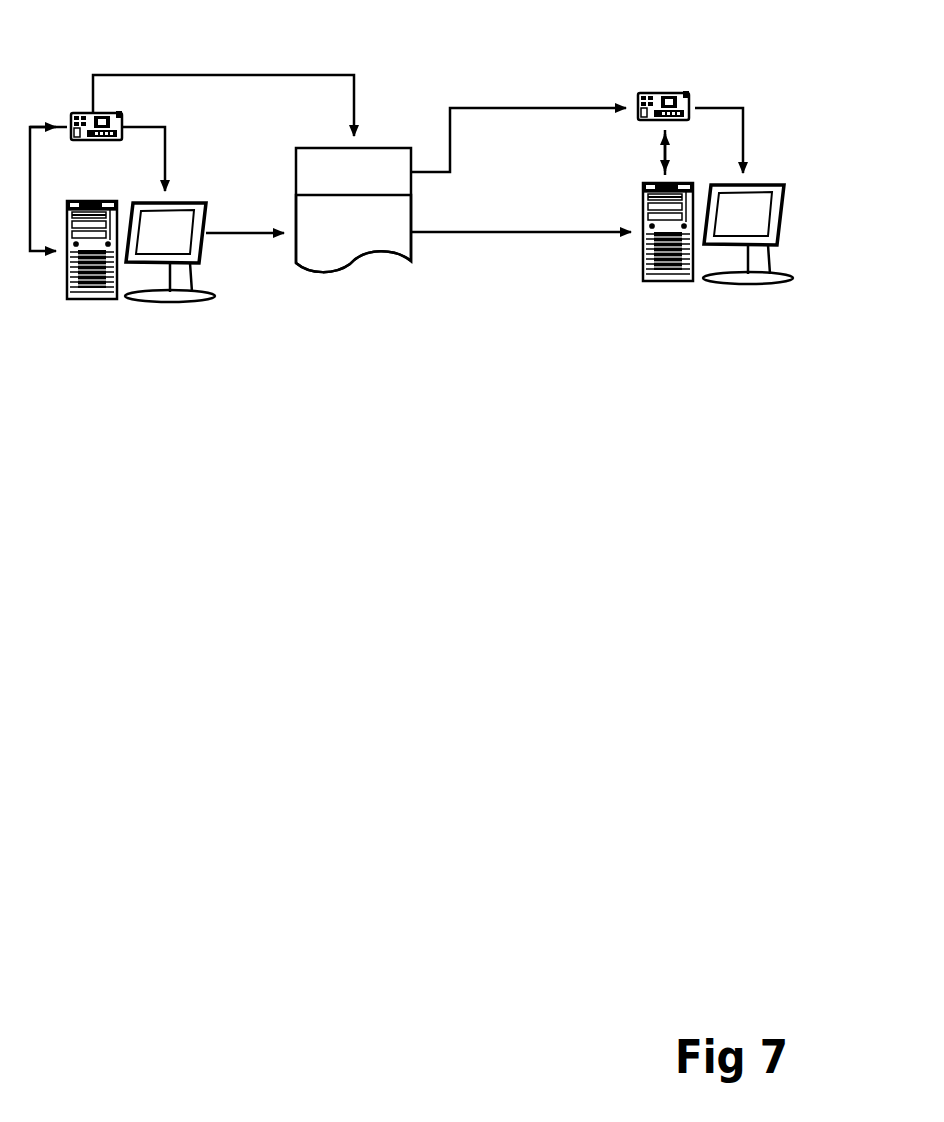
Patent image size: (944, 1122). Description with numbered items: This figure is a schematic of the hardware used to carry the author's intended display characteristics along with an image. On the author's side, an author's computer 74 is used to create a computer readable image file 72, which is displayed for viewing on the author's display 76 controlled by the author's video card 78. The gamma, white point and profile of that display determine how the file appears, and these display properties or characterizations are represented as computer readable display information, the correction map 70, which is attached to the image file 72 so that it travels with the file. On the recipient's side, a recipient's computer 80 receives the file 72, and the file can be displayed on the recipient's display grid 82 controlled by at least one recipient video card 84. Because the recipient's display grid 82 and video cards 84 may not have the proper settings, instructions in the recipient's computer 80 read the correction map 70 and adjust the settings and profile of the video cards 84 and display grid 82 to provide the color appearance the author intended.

The correction map 70 is at (378, 148).
The image file 72 is at (361, 262).
The author's computer 74 is at (90, 302).
The author's display 76 is at (190, 302).
The author's video card 78 is at (76, 114).
The recipient's computer 80 is at (666, 284).
The recipient's display grid 82 is at (780, 284).
The recipient video cards 84 is at (688, 96).